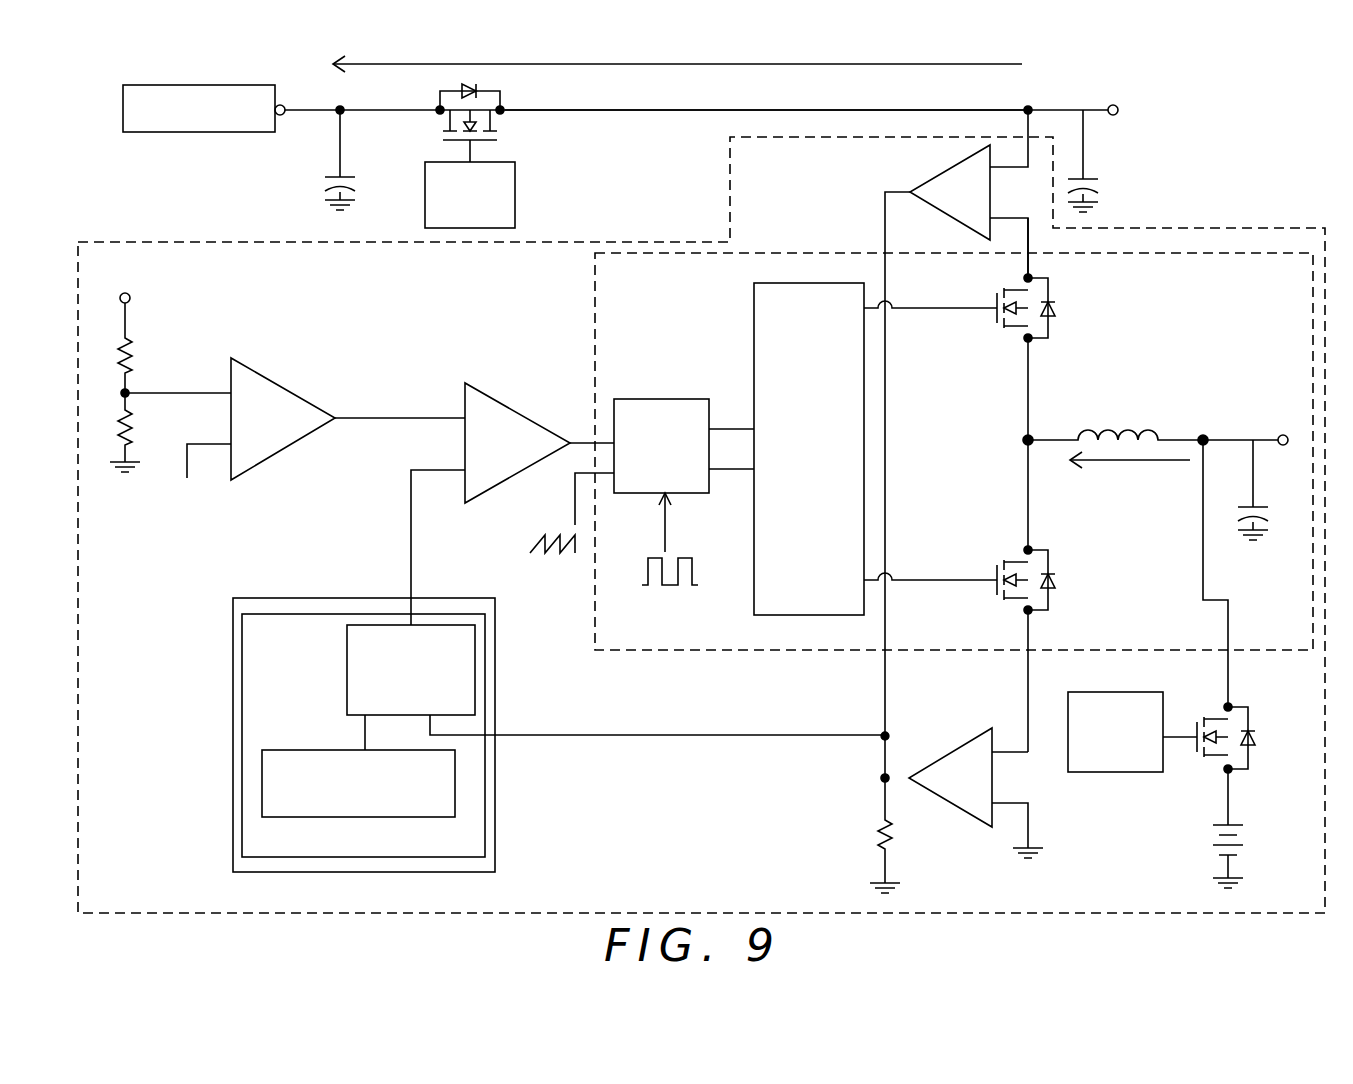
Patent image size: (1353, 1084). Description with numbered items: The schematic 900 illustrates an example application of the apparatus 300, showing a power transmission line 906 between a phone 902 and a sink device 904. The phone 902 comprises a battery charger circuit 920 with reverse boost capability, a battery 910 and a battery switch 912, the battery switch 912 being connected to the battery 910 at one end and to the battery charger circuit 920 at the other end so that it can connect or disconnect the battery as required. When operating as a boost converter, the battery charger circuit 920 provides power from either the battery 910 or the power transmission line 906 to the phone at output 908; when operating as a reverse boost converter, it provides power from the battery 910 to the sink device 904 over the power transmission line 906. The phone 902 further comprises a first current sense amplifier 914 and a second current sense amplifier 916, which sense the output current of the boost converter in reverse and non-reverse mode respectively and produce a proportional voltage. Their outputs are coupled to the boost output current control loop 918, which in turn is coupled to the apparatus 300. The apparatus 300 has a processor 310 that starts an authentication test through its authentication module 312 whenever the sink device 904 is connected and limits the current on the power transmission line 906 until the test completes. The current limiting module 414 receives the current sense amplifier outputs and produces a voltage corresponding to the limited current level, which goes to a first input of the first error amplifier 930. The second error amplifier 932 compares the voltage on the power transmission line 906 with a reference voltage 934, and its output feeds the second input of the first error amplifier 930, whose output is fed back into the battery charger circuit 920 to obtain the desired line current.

The schematic 900 is at (1205, 98).
The phone 902 is at (437, 118).
The sink device 904 is at (215, 85).
The power transmission line 906 is at (678, 113).
The output 908 is at (1283, 447).
The battery 910 is at (1208, 840).
The battery switch 912 is at (1118, 774).
The first current sense amplifier 914 is at (955, 166).
The second current sense amplifier 916 is at (955, 749).
The boost output current control loop 918 is at (697, 740).
The battery charger circuit 920 is at (1247, 253).
The first error amplifier 930 is at (502, 400).
The second error amplifier 932 is at (270, 376).
The reference voltage 934 is at (142, 292).
The apparatus 300 is at (232, 690).
The processor 310 is at (242, 735).
The authentication module 312 is at (322, 749).
The current limiting module 414 is at (347, 652).